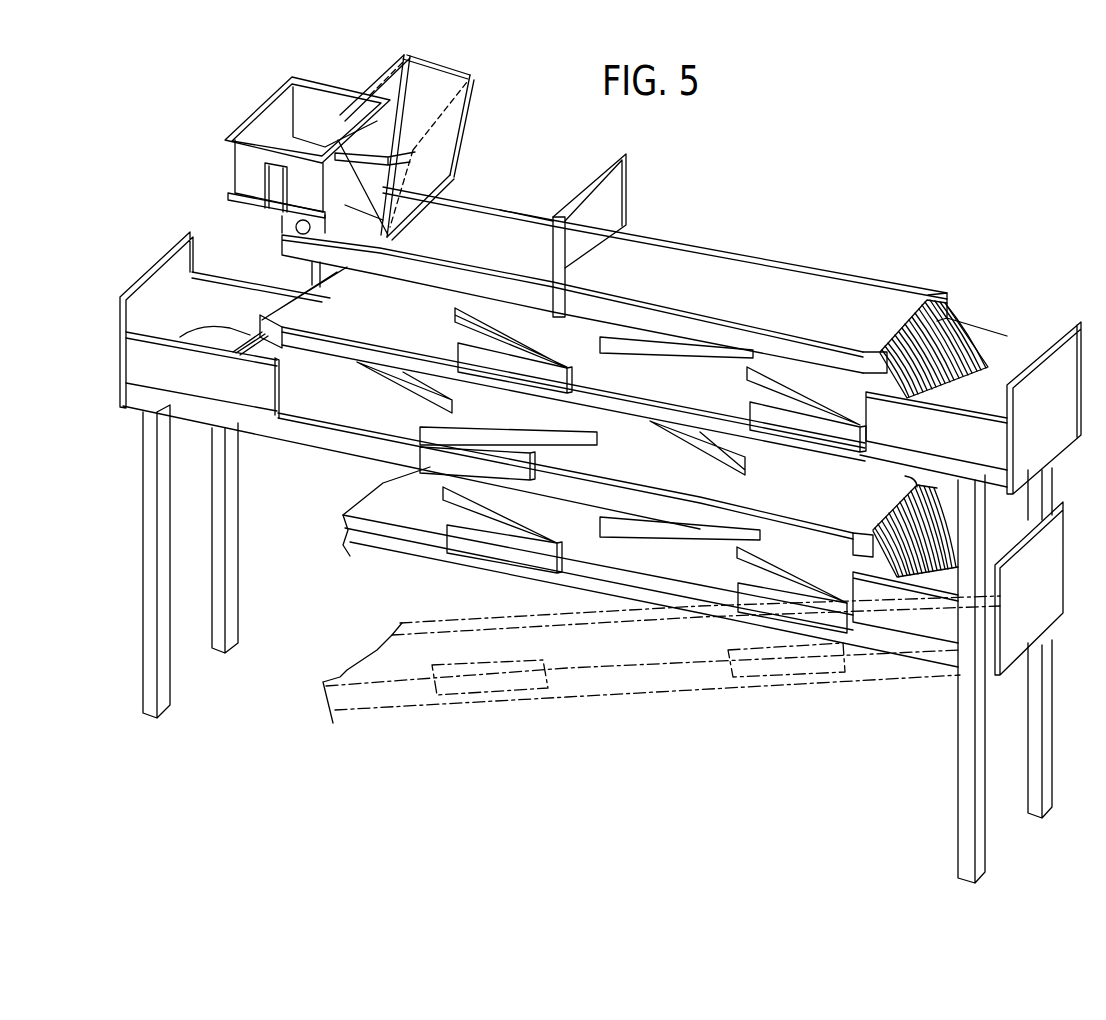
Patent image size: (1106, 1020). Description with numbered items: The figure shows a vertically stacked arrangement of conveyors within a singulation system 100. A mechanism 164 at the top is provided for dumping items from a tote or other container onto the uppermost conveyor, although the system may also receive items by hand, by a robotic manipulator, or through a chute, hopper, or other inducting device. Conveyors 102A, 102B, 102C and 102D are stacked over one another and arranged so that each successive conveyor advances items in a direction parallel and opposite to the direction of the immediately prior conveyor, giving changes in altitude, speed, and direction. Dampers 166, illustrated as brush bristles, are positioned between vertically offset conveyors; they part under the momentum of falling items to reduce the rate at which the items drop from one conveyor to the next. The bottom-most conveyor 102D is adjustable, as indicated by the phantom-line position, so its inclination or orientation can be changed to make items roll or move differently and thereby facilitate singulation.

The singulation system 100 is at (812, 212).
The mechanism for dumping items 164 is at (210, 158).
The dampers 166 is at (954, 335).
The conveyor 102A is at (851, 315).
The conveyor 102B is at (400, 315).
The conveyor 102C is at (356, 395).
The bottom-most conveyor 102D is at (706, 565).